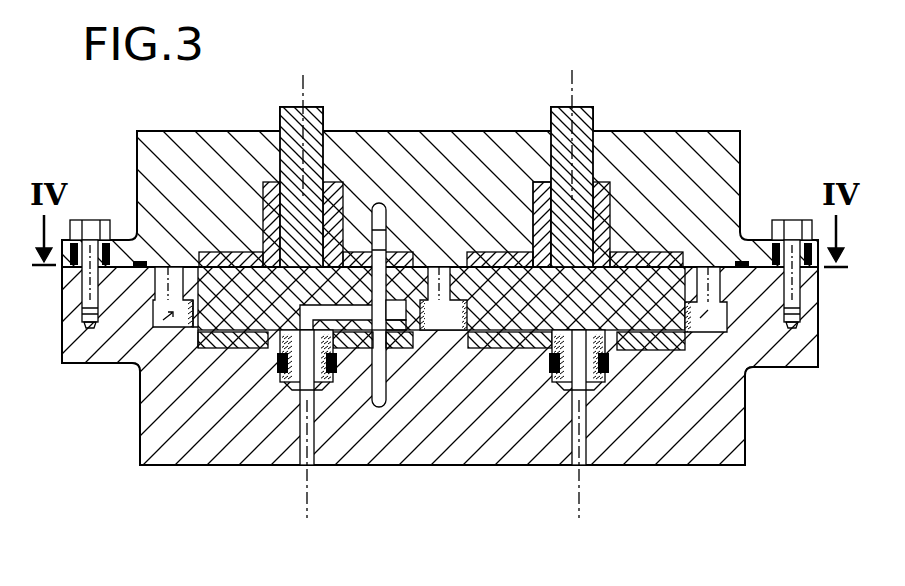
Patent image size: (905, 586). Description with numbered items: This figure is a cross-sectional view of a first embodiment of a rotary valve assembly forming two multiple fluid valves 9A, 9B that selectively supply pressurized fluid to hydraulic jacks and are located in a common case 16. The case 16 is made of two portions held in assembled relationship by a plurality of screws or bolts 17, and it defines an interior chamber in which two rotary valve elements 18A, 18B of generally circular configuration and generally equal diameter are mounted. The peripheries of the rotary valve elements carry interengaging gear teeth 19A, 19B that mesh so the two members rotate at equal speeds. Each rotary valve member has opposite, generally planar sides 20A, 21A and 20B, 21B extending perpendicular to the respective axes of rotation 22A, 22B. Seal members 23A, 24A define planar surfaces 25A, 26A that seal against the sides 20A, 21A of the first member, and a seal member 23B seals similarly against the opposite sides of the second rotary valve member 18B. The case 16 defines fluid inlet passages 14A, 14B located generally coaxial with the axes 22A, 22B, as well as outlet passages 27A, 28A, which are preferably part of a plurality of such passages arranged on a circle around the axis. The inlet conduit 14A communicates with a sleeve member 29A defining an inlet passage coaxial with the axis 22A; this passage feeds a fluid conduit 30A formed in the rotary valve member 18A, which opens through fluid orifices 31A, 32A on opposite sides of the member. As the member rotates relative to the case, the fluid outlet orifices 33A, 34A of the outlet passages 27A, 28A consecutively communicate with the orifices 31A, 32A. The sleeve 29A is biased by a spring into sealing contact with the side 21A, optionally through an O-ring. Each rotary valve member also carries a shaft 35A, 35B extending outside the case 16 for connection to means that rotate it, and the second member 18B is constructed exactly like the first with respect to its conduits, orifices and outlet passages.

The valve 9A is at (132, 368).
The valve 9B is at (707, 312).
The fluid inlet passage 14A is at (308, 492).
The fluid inlet passage 14B is at (580, 497).
The case 16 is at (183, 448).
The bolt 17 is at (89, 246).
The rotary valve element 18A is at (205, 336).
The rotary valve element 18B is at (645, 308).
The gear teeth 19A is at (101, 352).
The gear teeth 19B is at (705, 268).
The planar side 20A is at (218, 252).
The planar side 20B is at (506, 262).
The planar side 21A is at (226, 345).
The planar side 21B is at (515, 340).
The axis of rotation 22A is at (303, 88).
The axis of rotation 22B is at (572, 90).
The seal member 23A is at (222, 258).
The seal member 23B is at (536, 182).
The seal member 24A is at (207, 326).
The planar surface 25A is at (258, 272).
The planar surface 26A is at (260, 320).
The outlet passage 27A is at (379, 206).
The outlet passage 28A is at (387, 335).
The sleeve member 29A is at (320, 378).
The fluid conduit 30A is at (372, 300).
The fluid orifice 31A is at (387, 245).
The fluid orifice 32A is at (397, 335).
The fluid outlet orifice 33A is at (450, 288).
The fluid outlet orifice 34A is at (395, 320).
The shaft 35A is at (323, 117).
The shaft 35B is at (593, 117).